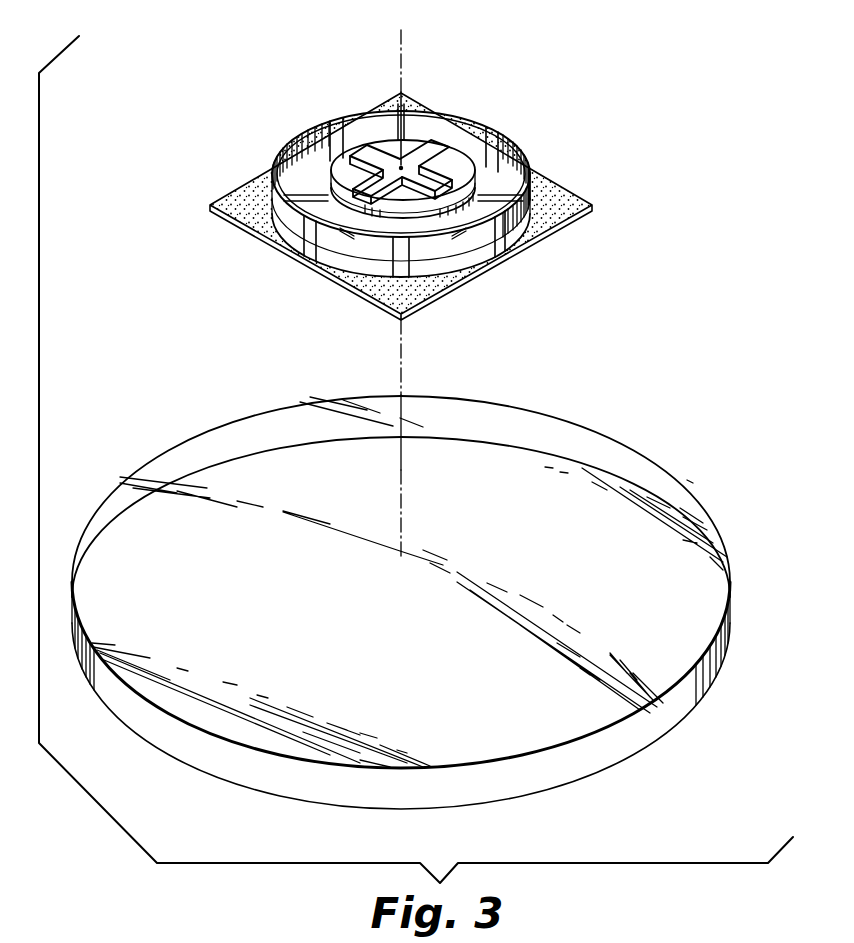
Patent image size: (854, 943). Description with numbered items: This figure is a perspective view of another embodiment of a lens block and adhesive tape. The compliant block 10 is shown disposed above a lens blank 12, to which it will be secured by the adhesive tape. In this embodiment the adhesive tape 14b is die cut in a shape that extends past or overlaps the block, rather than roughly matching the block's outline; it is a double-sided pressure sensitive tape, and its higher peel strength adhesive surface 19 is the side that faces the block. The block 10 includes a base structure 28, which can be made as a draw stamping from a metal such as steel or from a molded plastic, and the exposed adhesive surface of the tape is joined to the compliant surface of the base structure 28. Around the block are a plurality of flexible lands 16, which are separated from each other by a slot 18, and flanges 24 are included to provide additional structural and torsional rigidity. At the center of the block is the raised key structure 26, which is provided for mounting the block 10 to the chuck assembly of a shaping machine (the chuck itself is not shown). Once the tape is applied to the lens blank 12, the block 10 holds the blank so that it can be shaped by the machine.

The compliant block 10 is at (431, 199).
The lens blank 12 is at (540, 778).
The adhesive tape 14b is at (431, 206).
The flexible lands 16 is at (415, 209).
The slot 18 is at (313, 128).
The higher peel strength adhesive surface 19 is at (555, 207).
The flanges 24 is at (337, 253).
The raised key structure 26 is at (424, 155).
The base structure 28 is at (442, 270).